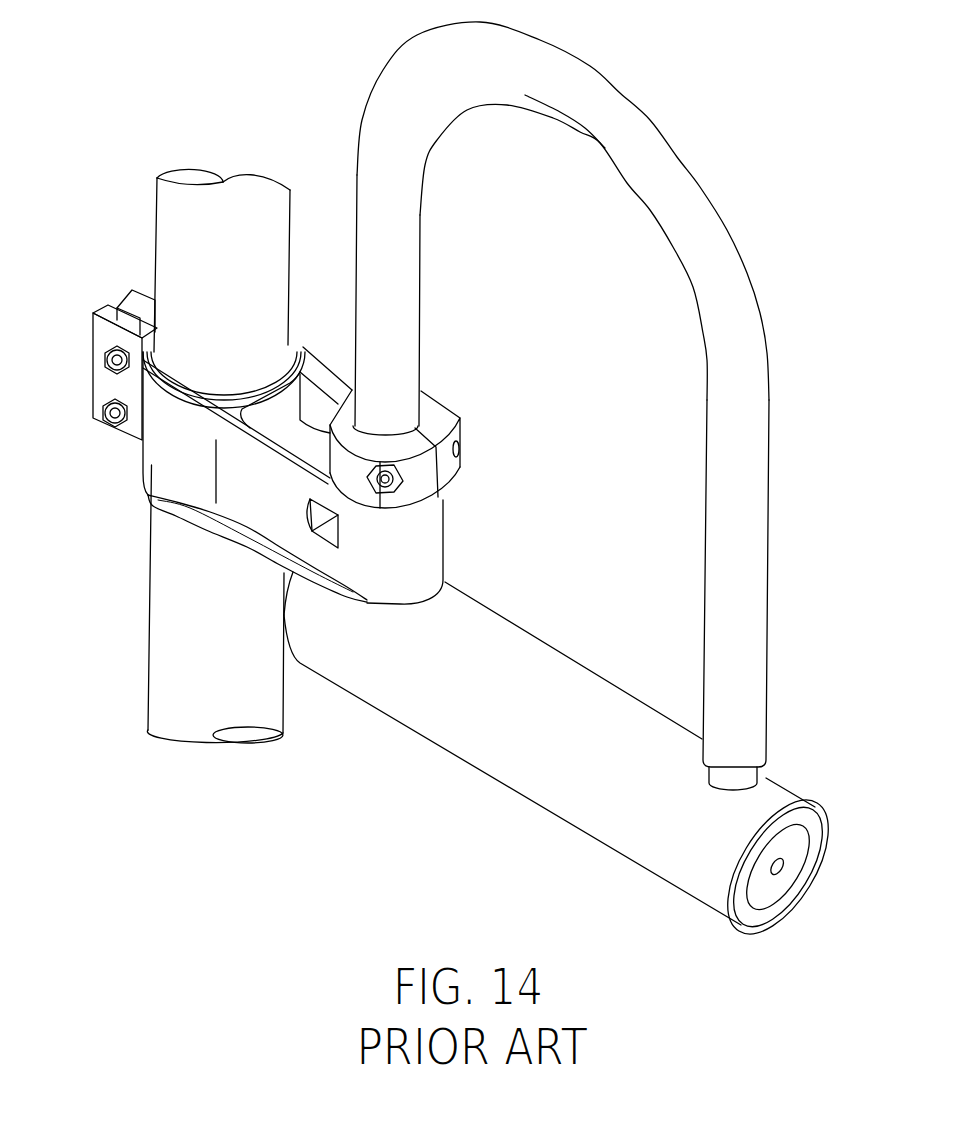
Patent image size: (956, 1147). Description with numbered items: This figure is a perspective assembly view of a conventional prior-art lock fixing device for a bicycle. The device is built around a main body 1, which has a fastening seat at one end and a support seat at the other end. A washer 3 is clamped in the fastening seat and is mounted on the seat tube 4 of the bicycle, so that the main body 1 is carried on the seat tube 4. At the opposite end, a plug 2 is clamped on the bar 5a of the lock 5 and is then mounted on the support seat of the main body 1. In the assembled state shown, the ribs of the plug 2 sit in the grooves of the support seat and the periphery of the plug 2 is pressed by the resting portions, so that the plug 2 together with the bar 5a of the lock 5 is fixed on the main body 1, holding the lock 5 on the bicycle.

The main body 1 is at (228, 521).
The plug 2 is at (450, 398).
The washer 3 is at (162, 410).
The seat tube 4 is at (148, 235).
The lock 5 is at (749, 246).
The bar 5a is at (410, 220).